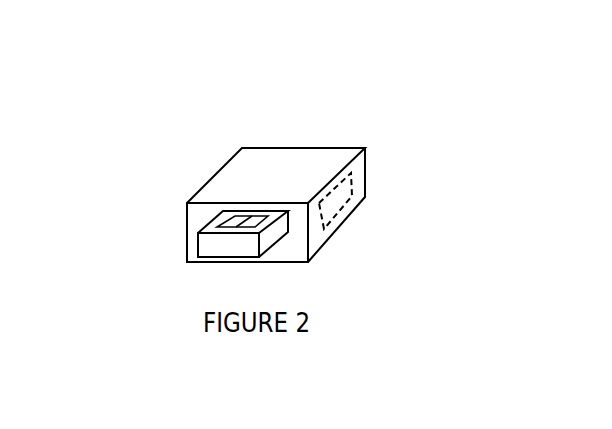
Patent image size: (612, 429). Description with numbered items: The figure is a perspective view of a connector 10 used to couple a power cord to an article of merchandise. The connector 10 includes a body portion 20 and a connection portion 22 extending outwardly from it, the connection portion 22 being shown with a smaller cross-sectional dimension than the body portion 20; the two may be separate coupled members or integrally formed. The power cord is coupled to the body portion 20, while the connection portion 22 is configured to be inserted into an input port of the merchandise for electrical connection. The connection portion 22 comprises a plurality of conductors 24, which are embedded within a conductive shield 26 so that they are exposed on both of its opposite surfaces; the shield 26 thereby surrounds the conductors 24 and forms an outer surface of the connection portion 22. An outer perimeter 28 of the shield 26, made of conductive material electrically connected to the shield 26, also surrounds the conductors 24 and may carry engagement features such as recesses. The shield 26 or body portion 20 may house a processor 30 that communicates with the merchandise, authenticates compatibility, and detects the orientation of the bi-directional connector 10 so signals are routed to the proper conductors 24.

The connector 10 is at (170, 115).
The body portion 20 is at (295, 160).
The connection portion 22 is at (192, 243).
The conductors 24 is at (190, 200).
The conductive shield 26 is at (257, 217).
The outer perimeter 28 is at (235, 247).
The processor 30 is at (352, 185).